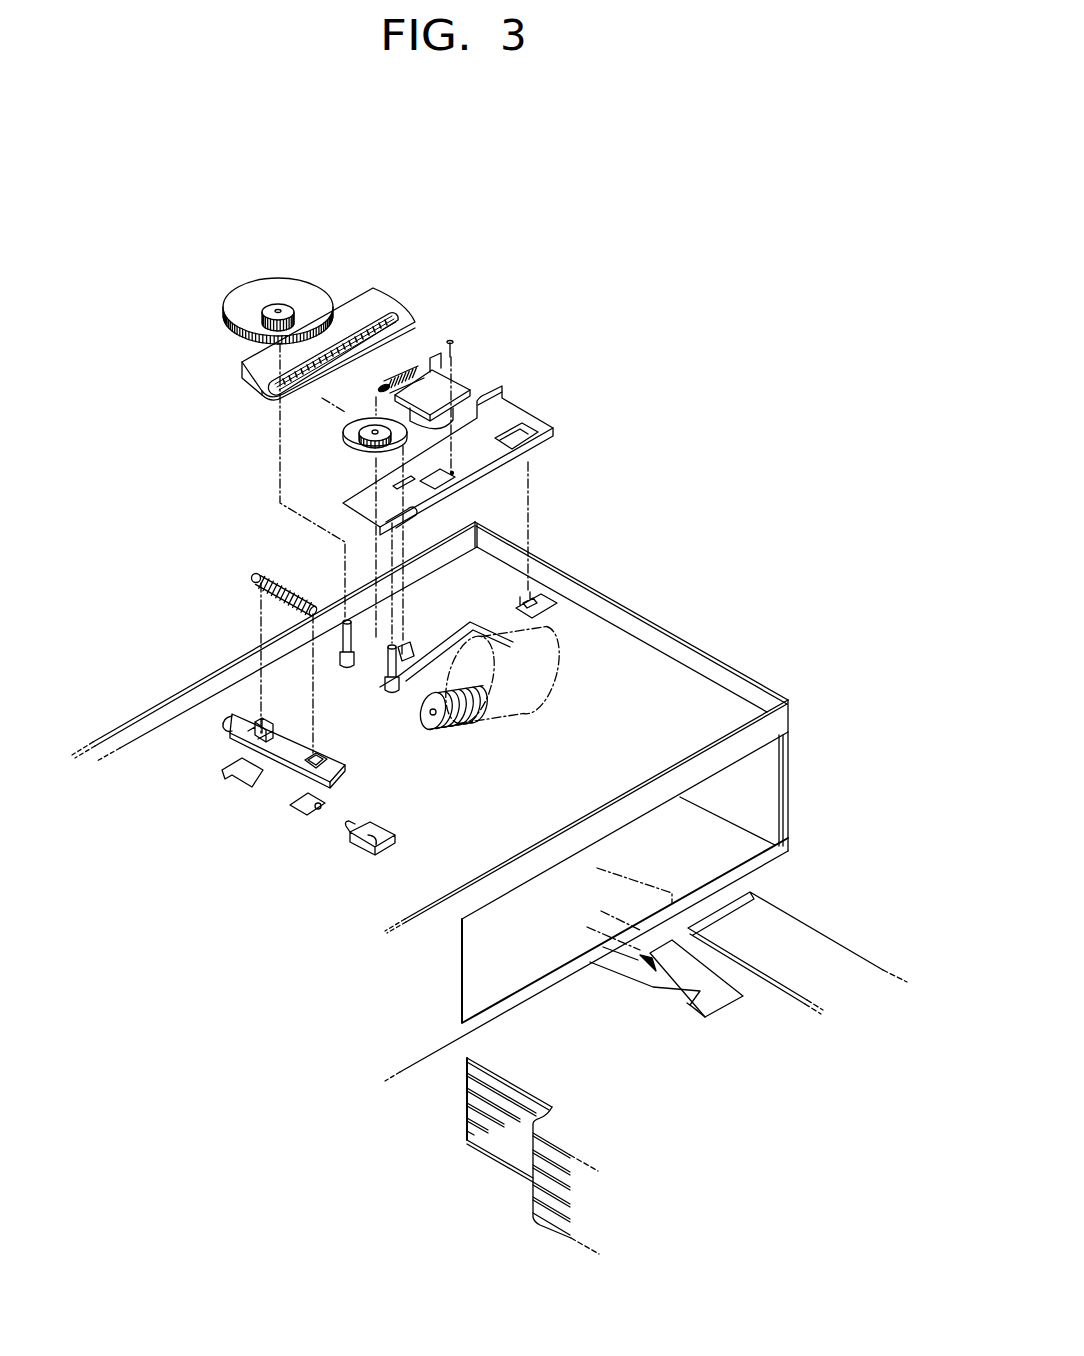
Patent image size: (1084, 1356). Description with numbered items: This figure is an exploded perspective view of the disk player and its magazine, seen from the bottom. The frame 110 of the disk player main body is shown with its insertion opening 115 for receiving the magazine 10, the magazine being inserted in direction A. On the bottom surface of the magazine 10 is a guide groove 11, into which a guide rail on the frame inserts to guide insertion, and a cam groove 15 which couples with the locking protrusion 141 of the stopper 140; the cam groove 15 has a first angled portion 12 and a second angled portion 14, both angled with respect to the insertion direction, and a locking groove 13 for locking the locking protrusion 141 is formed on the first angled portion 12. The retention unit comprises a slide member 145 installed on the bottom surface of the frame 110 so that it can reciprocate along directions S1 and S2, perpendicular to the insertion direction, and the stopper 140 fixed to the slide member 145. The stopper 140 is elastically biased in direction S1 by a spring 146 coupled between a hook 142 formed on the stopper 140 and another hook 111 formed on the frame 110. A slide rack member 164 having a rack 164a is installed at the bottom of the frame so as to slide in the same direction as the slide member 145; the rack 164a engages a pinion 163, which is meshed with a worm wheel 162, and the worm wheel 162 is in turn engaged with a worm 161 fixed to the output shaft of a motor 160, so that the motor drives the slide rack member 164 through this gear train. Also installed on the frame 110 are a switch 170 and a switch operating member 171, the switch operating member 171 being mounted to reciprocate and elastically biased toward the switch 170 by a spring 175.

The magazine 10 is at (465, 1178).
The guide groove 11 is at (781, 997).
The first angled portion 12 is at (665, 978).
The locking groove 13 is at (697, 1008).
The second angled portion 14 is at (708, 978).
The cam groove 15 is at (640, 958).
The frame 110 is at (746, 648).
The hook 111 is at (405, 644).
The insertion opening 115 is at (768, 794).
The stopper 140 is at (512, 322).
The locking protrusion 141 is at (500, 451).
The hook 142 is at (480, 366).
The slide member 145 is at (495, 460).
The spring 146 is at (400, 378).
The motor 160 is at (523, 684).
The worm 161 is at (460, 724).
The worm wheel 162 is at (344, 433).
The pinion 163 is at (283, 289).
The slide rack member 164 is at (361, 282).
The rack 164a is at (385, 303).
The switch 170 is at (373, 857).
The switch operating member 171 is at (254, 717).
The spring 175 is at (273, 574).